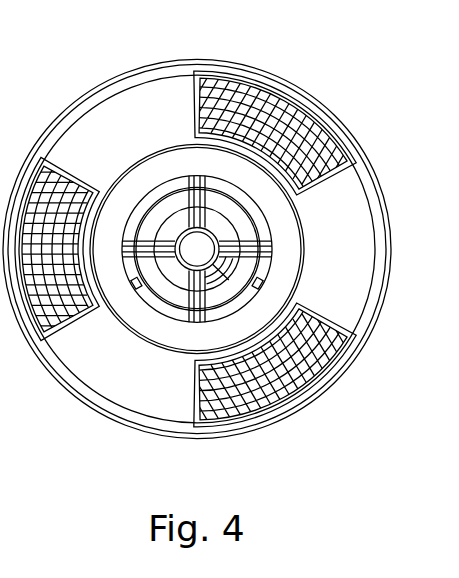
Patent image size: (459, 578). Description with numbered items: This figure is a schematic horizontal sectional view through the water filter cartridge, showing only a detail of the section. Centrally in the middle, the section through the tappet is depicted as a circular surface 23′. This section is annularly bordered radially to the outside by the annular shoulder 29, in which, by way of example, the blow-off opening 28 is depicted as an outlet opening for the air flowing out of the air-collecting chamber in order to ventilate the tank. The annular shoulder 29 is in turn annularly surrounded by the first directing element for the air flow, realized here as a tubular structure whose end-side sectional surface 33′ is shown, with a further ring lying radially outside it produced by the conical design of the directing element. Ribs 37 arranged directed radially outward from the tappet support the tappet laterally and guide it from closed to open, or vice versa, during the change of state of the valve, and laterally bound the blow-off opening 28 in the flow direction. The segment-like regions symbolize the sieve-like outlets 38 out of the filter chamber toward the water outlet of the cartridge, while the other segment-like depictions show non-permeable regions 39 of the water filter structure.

The sieve-like outlets 38 is at (273, 113).
The blow-off opening 28 is at (275, 345).
The non-permeable regions 39 is at (172, 113).
The annular shoulder 29 is at (165, 180).
The end-side sectional surface of the first directing element 33′ is at (150, 203).
The circular surface 23′ is at (203, 247).
The ribs 37 is at (250, 288).